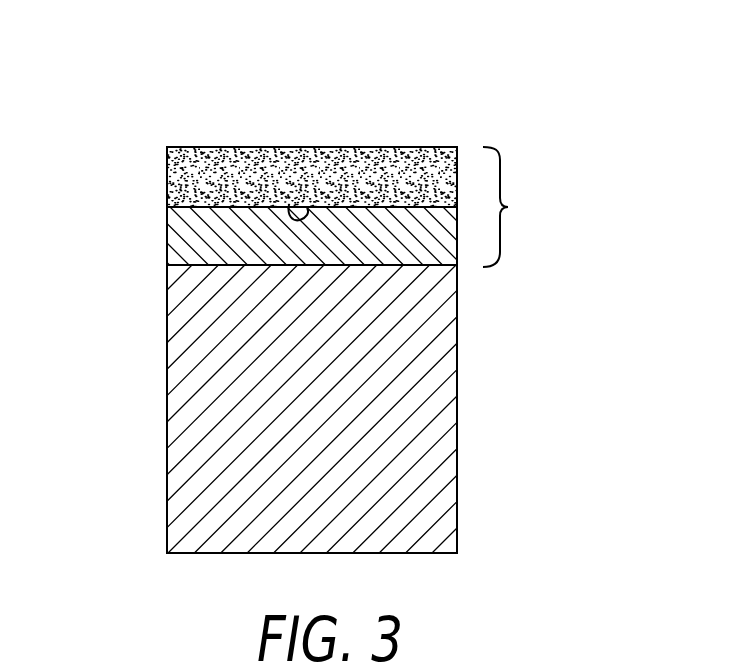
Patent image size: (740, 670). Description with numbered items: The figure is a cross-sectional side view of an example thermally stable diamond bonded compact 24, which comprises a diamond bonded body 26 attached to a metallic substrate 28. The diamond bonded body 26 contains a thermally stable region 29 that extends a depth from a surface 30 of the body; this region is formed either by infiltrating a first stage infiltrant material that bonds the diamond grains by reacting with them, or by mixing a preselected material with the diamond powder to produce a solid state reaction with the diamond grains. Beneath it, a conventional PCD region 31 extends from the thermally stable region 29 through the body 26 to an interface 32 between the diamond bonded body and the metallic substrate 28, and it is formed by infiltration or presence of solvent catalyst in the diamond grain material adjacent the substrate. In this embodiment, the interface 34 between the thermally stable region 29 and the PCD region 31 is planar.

The thermally stable diamond bonded compact 24 is at (396, 98).
The diamond bonded body 26 is at (508, 207).
The metallic substrate 28 is at (433, 457).
The thermally stable region 29 is at (182, 186).
The surface 30 is at (226, 150).
The conventional PCD region 31 is at (183, 245).
The interface 32 is at (223, 265).
The interface 34 is at (289, 205).